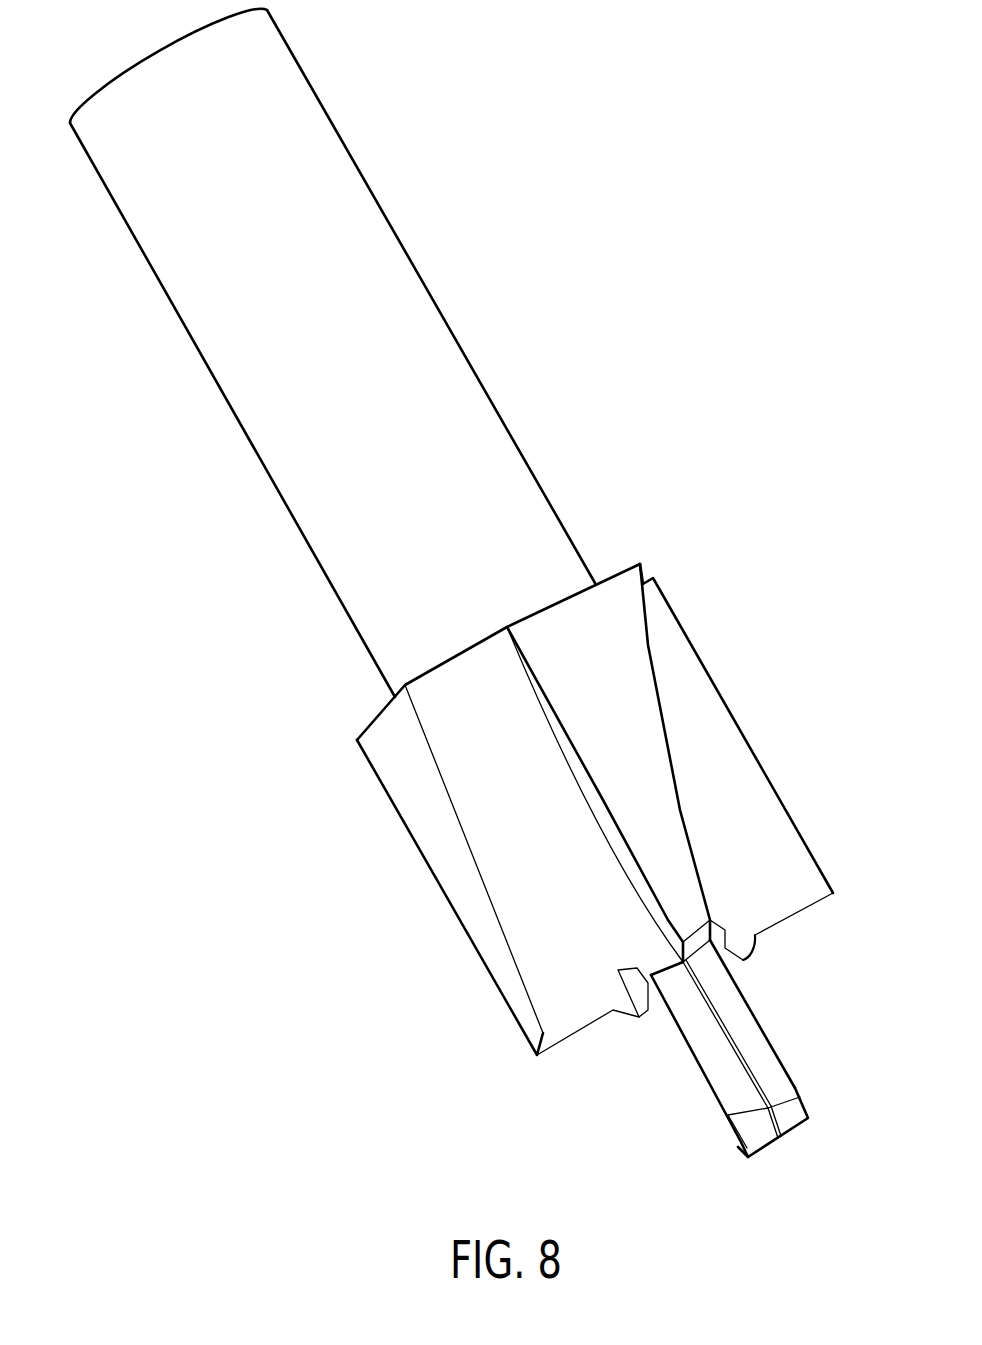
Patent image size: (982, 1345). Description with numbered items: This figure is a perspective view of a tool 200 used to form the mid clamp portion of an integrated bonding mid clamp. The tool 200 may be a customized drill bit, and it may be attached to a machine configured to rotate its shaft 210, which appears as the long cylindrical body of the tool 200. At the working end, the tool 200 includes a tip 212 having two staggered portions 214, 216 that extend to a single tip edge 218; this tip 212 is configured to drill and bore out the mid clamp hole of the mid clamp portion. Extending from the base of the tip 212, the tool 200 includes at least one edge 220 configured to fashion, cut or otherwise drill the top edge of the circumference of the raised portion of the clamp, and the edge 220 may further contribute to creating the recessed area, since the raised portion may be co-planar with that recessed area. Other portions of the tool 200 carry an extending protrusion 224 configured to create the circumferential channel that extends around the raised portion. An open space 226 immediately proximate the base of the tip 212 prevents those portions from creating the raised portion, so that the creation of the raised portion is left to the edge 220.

The tool 200 is at (461, 612).
The shaft 210 is at (296, 78).
The tip 212 is at (742, 1062).
The staggered portion 214 is at (780, 1078).
The staggered portion 216 is at (720, 1088).
The tip edge 218 is at (792, 1135).
The edge 220 is at (683, 952).
The extending protrusion 224 is at (755, 948).
The open space 226 is at (727, 944).